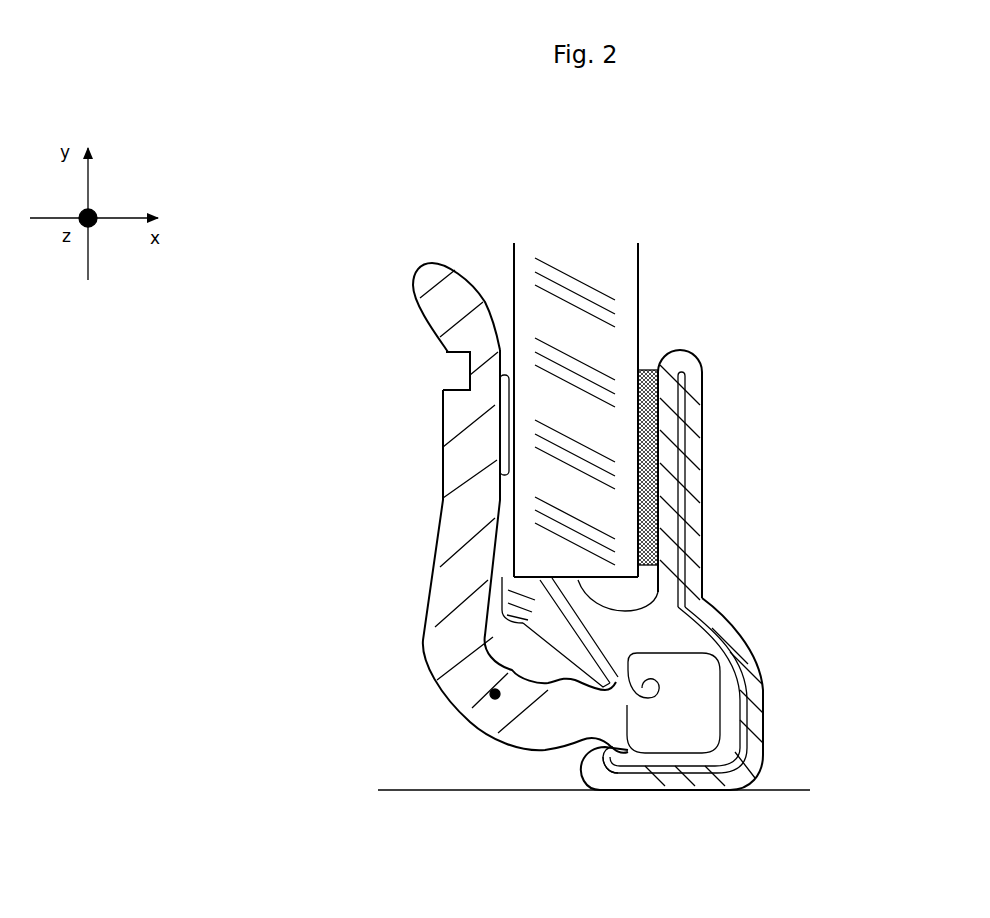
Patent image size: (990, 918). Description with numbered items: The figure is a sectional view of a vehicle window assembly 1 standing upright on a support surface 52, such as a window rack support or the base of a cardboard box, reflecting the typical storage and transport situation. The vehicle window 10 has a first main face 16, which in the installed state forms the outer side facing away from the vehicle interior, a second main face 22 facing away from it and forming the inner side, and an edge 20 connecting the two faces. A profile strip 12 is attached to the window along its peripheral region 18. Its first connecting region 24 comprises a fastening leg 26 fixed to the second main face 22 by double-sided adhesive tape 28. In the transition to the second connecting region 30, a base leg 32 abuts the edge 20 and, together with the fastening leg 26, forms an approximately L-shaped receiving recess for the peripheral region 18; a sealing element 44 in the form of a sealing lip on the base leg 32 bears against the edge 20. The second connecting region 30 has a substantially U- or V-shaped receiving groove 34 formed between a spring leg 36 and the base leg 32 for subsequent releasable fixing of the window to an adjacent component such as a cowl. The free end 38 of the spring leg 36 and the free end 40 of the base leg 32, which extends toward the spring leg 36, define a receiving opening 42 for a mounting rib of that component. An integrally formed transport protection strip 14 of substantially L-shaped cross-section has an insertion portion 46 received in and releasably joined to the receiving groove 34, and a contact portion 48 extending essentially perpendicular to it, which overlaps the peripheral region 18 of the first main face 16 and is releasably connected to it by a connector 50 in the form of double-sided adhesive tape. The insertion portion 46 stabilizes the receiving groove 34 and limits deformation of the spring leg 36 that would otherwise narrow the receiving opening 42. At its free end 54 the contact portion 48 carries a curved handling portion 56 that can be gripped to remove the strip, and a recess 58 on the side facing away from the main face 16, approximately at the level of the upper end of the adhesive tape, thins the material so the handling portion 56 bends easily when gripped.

The vehicle window assembly 1 is at (362, 195).
The vehicle window 10 is at (647, 218).
The profile strip 12 is at (741, 543).
The transport protection strip 14 is at (409, 533).
The first main face 16 is at (513, 296).
The peripheral region 18 is at (587, 360).
The edge 20 is at (739, 543).
The second main face 22 is at (640, 310).
The first connecting region 24 is at (900, 470).
The fastening leg 26 is at (683, 420).
The double-sided adhesive tape 28 is at (654, 372).
The second connecting region 30 is at (730, 618).
The base leg 32 is at (610, 633).
The receiving groove 34 is at (673, 703).
The spring leg 36 is at (700, 780).
The free end of the spring leg 38 is at (590, 773).
The free end of the base leg 40 is at (614, 680).
The receiving opening 42 is at (582, 743).
The sealing element 44 is at (521, 603).
The insertion portion 46 is at (572, 726).
The contact portion 48 is at (453, 533).
The connector 50 is at (497, 377).
The support surface 52 is at (403, 790).
The free end 54 is at (456, 305).
The handling portion 56 is at (378, 268).
The recess 58 is at (470, 377).